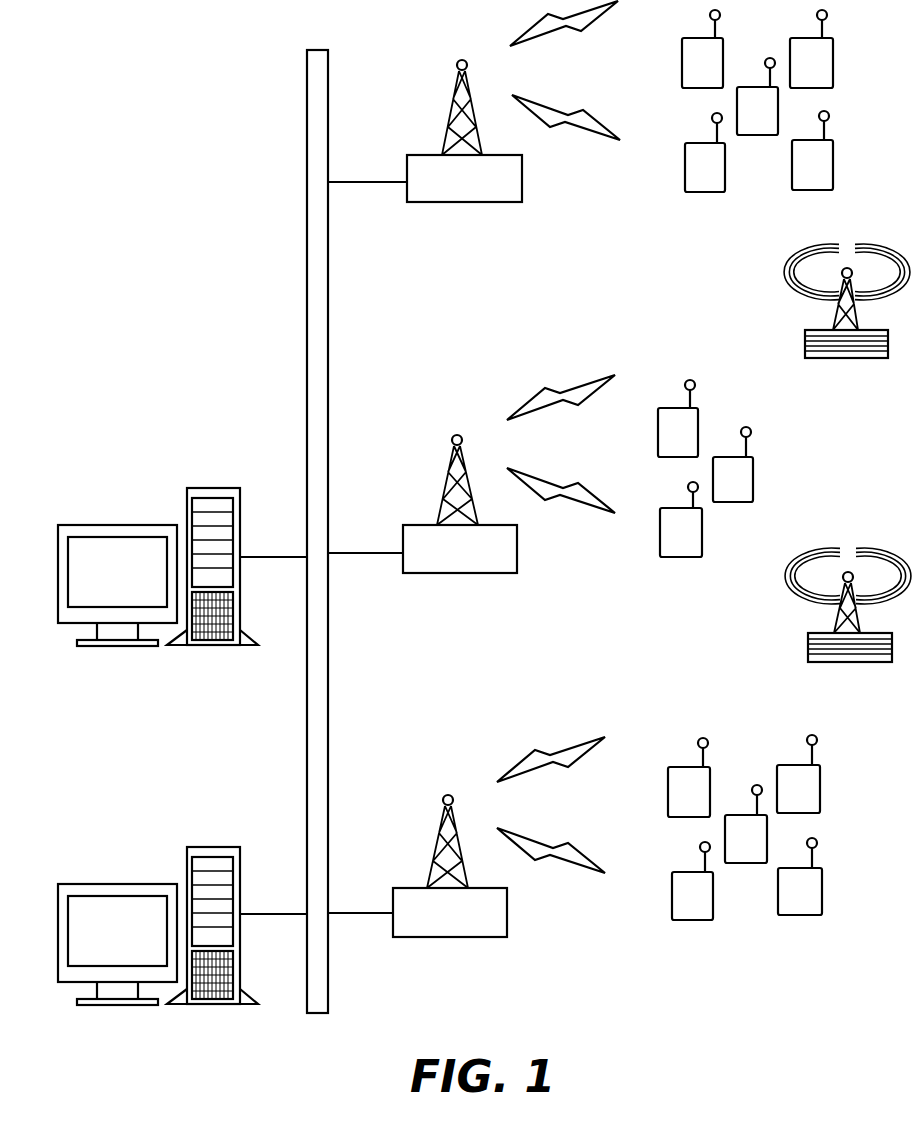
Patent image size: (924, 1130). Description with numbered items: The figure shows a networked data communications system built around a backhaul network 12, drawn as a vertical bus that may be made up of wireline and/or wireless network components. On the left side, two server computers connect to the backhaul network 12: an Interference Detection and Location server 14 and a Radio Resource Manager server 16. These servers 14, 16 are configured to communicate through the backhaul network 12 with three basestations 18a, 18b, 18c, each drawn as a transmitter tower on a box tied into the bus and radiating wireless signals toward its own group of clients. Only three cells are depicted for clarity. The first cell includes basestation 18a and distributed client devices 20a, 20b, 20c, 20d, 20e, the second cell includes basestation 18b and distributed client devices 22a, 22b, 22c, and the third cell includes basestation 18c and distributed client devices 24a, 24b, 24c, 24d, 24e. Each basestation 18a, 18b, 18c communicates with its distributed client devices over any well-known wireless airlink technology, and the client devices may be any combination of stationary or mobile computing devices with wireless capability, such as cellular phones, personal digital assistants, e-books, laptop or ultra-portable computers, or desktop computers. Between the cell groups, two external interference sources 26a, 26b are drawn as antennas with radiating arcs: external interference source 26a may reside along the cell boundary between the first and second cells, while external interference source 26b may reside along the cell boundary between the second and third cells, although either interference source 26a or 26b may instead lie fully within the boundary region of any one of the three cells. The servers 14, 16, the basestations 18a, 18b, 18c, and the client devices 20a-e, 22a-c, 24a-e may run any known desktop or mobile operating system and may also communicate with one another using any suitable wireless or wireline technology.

The backhaul network 12 is at (307, 105).
The Interference Detection and Location (IDL) server 14 is at (187, 500).
The Radio Resource Manager (RRM) server 16 is at (187, 858).
The basestation 18a is at (522, 202).
The basestation 18b is at (517, 573).
The basestation 18c is at (507, 937).
The distributed client device 20a is at (702, 49).
The distributed client device 20b is at (811, 49).
The distributed client device 20c is at (757, 96).
The distributed client device 20d is at (705, 152).
The distributed client device 20e is at (812, 150).
The distributed client device 22a is at (678, 418).
The distributed client device 22b is at (733, 464).
The distributed client device 22c is at (681, 519).
The distributed client device 24a is at (689, 777).
The distributed client device 24b is at (798, 774).
The distributed client device 24c is at (746, 824).
The distributed client device 24d is at (692, 881).
The distributed client device 24e is at (800, 876).
The external interference source 26a is at (805, 340).
The external interference source 26b is at (808, 645).